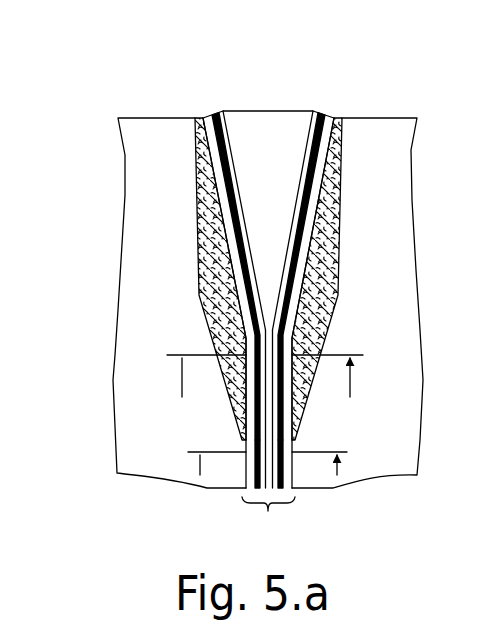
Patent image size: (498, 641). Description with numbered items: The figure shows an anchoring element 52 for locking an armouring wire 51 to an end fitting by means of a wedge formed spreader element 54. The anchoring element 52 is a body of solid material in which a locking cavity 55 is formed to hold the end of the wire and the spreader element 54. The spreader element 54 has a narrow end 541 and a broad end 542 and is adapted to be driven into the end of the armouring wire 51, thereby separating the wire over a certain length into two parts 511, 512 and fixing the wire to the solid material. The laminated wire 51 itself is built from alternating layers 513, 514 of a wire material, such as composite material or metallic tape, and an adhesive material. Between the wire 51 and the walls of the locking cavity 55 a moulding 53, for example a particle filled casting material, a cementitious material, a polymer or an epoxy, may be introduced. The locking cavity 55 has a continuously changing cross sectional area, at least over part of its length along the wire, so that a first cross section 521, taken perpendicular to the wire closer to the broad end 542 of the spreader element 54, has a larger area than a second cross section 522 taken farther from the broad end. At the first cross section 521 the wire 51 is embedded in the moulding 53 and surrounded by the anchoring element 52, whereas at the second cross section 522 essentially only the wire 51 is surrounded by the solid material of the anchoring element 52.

The armouring wire 51 is at (270, 513).
The first wire part 511 is at (212, 105).
The second wire part 512 is at (327, 105).
The wire material layer 513 is at (243, 490).
The adhesive material layer 514 is at (297, 490).
The anchoring element 52 is at (148, 130).
The moulding 53 is at (325, 217).
The spreader element 54 is at (267, 128).
The narrow end 541 is at (260, 322).
The broad end 542 is at (293, 105).
The locking cavity 55 is at (195, 253).
The first cross section 521 is at (165, 354).
The second cross section 522 is at (186, 452).